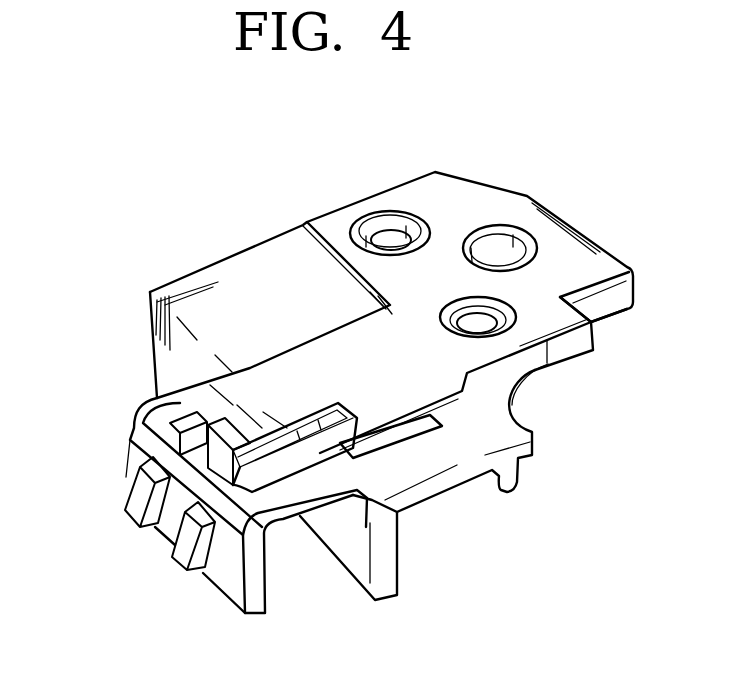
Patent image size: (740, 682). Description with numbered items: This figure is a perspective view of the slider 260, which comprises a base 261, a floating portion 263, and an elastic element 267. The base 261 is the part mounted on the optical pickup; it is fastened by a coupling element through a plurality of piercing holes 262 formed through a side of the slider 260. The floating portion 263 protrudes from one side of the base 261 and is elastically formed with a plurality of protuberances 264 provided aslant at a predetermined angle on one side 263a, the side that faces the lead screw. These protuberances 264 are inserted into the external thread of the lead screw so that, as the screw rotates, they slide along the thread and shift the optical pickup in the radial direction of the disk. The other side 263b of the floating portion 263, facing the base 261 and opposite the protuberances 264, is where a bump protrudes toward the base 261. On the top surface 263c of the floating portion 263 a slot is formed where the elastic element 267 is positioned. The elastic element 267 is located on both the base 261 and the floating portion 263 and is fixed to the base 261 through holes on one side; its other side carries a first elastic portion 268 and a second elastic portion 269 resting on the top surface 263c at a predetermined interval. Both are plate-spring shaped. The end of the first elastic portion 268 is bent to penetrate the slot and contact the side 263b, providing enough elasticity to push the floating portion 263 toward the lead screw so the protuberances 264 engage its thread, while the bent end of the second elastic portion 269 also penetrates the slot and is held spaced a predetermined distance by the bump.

The slider 260 is at (484, 172).
The base 261 is at (492, 428).
The piercing holes 262 is at (385, 236).
The floating portion 263 is at (265, 600).
The one side 263a is at (230, 587).
The other side 263b is at (267, 573).
The top surface 263c is at (165, 403).
The protuberances 264 is at (128, 510).
The elastic element 267 is at (605, 257).
The first elastic portion 268 is at (327, 440).
The second elastic portion 269 is at (283, 378).